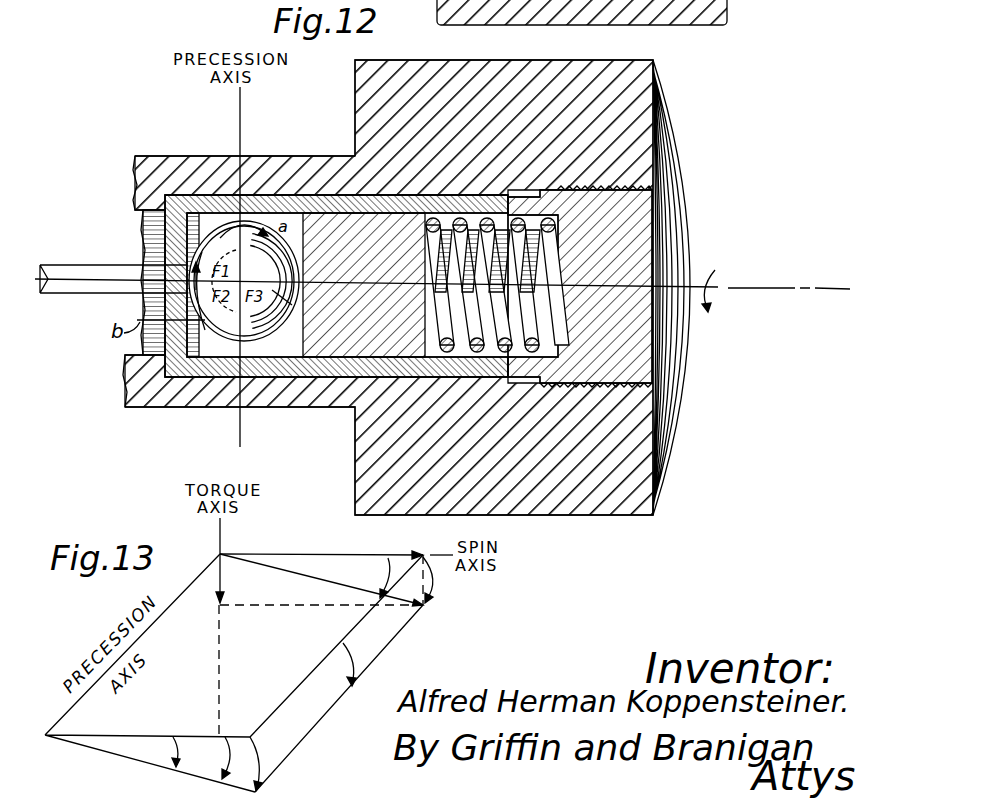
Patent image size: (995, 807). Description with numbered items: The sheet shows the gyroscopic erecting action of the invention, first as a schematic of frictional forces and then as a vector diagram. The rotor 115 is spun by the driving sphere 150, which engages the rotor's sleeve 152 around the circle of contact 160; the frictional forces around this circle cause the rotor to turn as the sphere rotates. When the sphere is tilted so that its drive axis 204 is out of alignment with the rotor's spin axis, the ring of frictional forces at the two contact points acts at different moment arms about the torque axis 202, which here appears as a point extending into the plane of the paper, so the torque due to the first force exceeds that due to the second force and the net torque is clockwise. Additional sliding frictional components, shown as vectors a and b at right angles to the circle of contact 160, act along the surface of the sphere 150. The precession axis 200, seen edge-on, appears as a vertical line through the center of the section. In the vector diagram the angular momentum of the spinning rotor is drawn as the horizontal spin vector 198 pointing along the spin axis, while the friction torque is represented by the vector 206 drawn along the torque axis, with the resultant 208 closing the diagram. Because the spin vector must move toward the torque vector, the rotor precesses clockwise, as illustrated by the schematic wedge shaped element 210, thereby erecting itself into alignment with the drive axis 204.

In FIG. 12, the rotor 115 is at (725, 13).
In FIG. 12, the rotor's sleeve 152 is at (173, 358).
In FIG. 12, the circle of contact 160 is at (150, 229).
In FIG. 12, the driving sphere 150 is at (244, 281).
In FIG. 12, the torque axis 202 is at (252, 281).
In FIG. 12, the precession axis 200 is at (242, 129).
In FIG. 12, the drive axis 204 is at (840, 288).
In FIG. 13, the spin vector 198 is at (292, 554).
In FIG. 13, the friction torque vector 206 is at (222, 579).
In FIG. 13, the resultant vector 208 is at (345, 585).
In FIG. 13, the wedge shaped element 210 is at (160, 781).